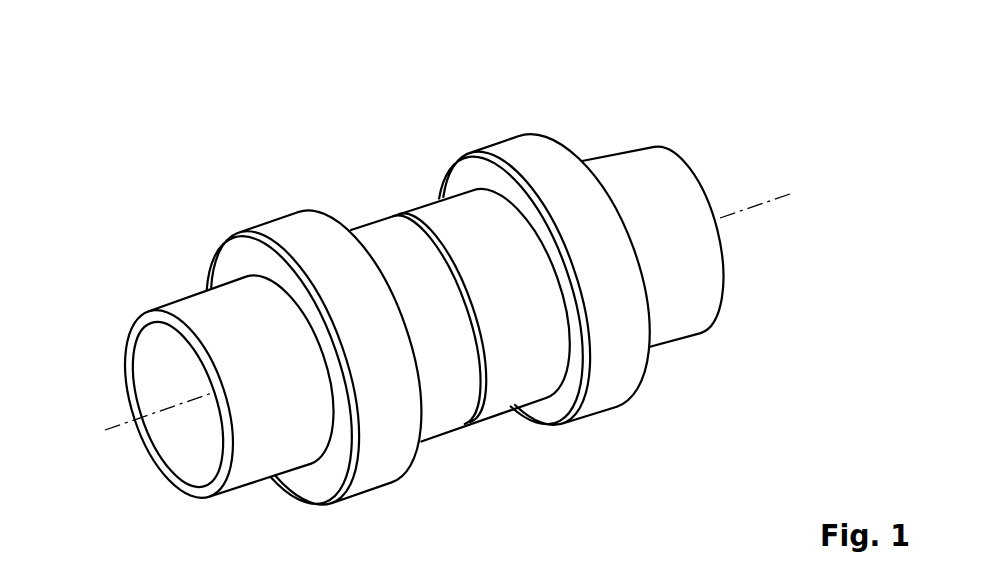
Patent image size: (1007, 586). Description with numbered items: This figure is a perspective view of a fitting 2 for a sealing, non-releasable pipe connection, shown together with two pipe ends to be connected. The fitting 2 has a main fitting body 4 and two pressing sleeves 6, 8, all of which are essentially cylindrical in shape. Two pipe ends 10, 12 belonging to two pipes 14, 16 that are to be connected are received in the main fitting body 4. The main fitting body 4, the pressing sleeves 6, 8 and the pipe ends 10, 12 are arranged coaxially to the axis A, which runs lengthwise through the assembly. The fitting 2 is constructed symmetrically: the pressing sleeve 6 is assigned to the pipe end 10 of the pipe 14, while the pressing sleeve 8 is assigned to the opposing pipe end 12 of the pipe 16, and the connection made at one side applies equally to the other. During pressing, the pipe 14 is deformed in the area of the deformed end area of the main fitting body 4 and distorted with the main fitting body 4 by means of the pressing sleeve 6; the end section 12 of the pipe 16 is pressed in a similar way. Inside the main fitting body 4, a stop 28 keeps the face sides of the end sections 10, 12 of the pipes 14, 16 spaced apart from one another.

The fitting 2 is at (327, 72).
The main fitting body 4 is at (387, 220).
The pressing sleeve 6 is at (283, 218).
The pressing sleeve 8 is at (524, 147).
The pipe end 10 is at (192, 307).
The pipe end 12 is at (647, 147).
The pipe 14 is at (80, 388).
The pipe 16 is at (712, 156).
The stop 28 is at (478, 424).
The axis A is at (122, 432).